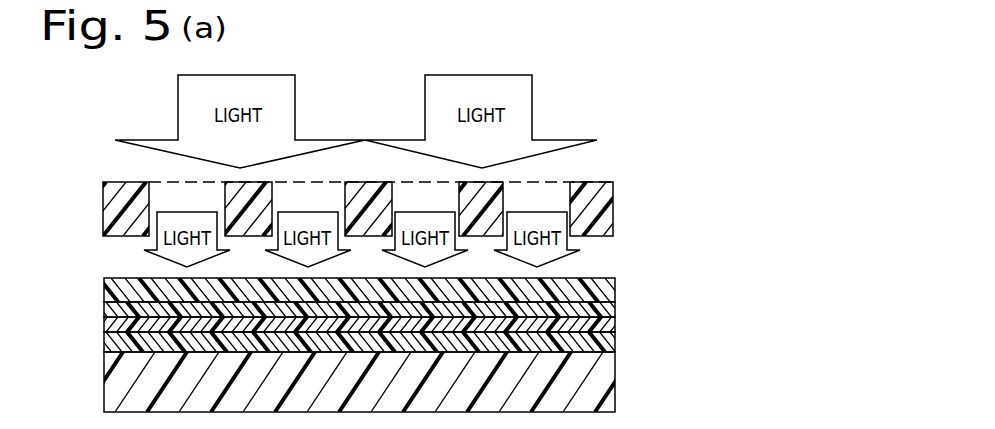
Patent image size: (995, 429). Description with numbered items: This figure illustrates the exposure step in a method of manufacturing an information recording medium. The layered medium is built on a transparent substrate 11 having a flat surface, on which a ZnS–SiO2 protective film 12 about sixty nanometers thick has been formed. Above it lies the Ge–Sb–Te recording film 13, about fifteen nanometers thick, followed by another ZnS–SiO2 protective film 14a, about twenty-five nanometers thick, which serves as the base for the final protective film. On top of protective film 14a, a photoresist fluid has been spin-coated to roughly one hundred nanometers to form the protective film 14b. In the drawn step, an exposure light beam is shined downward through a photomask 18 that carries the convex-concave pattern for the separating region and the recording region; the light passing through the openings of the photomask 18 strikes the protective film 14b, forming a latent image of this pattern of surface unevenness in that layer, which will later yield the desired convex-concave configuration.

The photomask 18 is at (601, 185).
The protective film 14b is at (615, 278).
The protective film 14a is at (616, 302).
The recording film 13 is at (616, 318).
The protective film 12 is at (617, 338).
The transparent substrate 11 is at (617, 385).